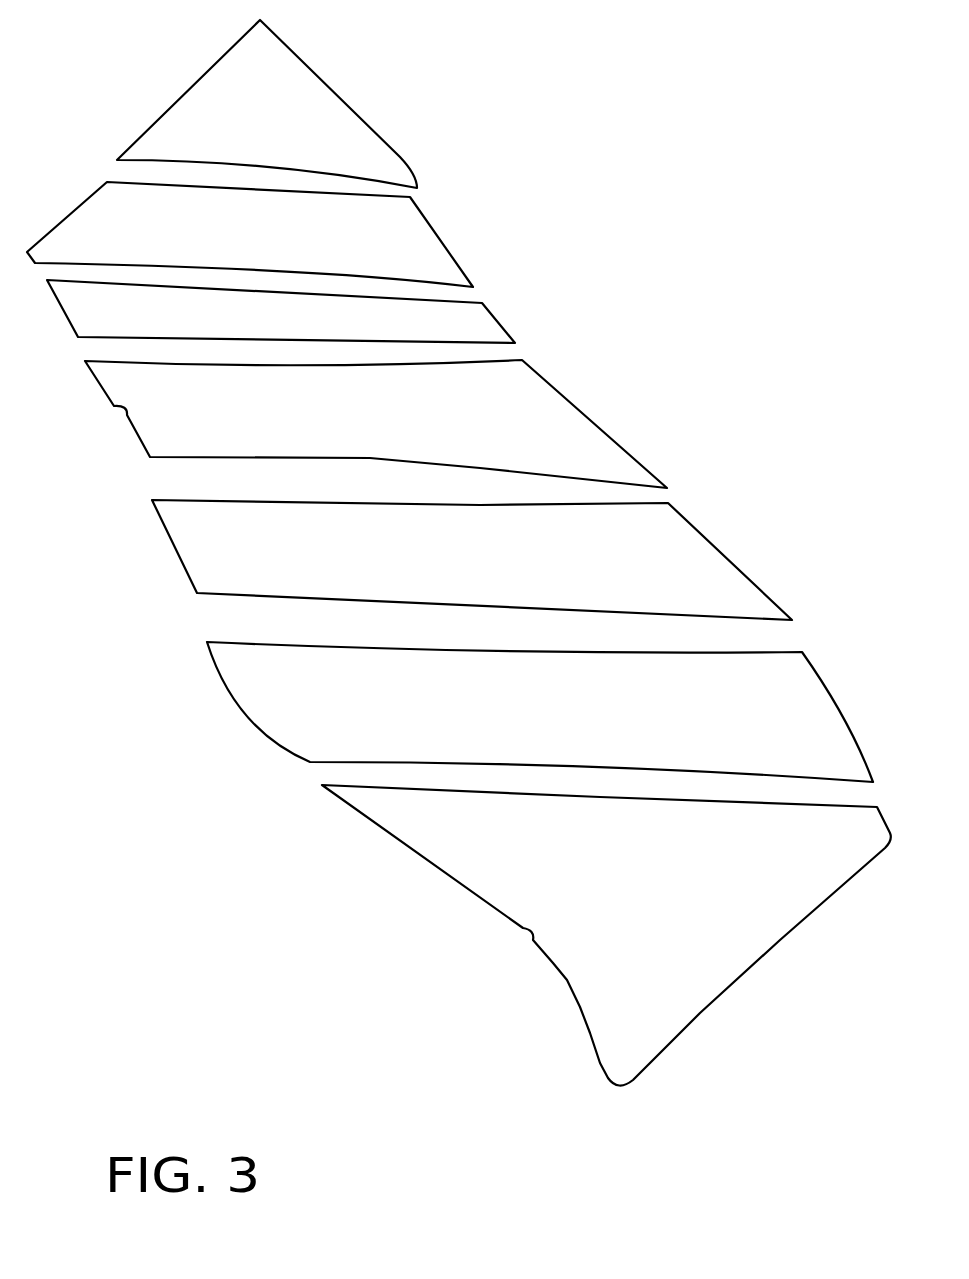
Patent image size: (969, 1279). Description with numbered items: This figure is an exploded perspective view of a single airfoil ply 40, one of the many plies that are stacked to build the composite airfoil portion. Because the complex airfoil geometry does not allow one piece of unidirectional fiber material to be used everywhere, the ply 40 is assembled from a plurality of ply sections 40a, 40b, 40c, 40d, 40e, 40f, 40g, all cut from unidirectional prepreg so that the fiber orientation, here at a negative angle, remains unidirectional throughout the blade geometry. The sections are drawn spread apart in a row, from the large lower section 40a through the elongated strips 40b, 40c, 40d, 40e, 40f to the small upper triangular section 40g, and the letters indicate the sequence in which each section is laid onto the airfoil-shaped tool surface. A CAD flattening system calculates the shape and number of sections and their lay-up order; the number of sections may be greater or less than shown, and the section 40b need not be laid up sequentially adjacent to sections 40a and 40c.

The airfoil ply 40 is at (246, 912).
The ply section 40a is at (679, 907).
The ply section 40b is at (586, 722).
The ply section 40c is at (499, 567).
The ply section 40d is at (380, 424).
The ply section 40e is at (266, 322).
The ply section 40f is at (263, 242).
The ply section 40g is at (284, 129).